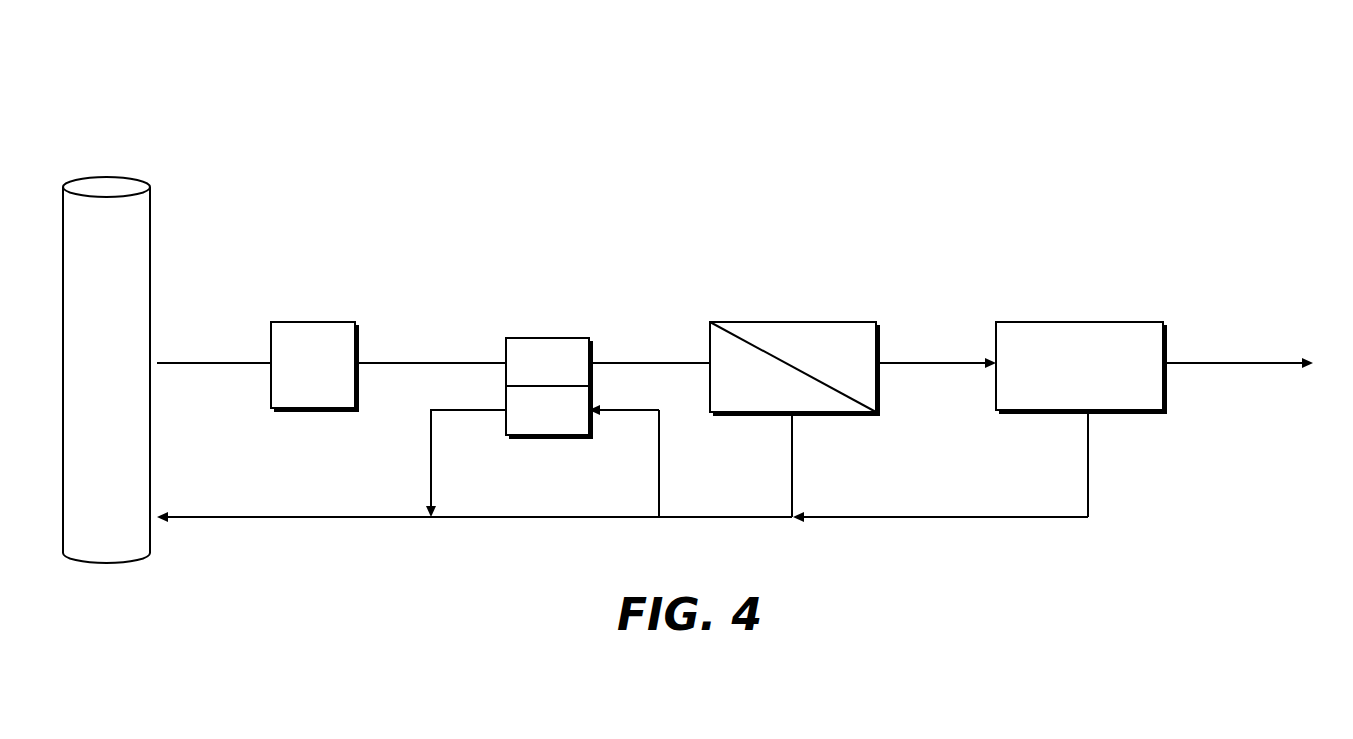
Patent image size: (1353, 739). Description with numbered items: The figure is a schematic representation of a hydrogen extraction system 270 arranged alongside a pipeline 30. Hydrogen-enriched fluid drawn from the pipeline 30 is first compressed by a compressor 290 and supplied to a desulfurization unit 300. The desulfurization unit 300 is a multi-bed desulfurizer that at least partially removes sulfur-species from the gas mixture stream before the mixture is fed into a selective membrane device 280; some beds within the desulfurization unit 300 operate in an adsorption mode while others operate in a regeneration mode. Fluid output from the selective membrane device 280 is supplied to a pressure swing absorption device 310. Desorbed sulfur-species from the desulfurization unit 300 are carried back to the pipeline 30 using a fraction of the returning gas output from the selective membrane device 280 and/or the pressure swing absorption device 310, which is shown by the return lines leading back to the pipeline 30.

The pipeline 30 is at (123, 172).
The hydrogen extraction system 270 is at (763, 127).
The selective membrane device 280 is at (828, 320).
The compressor 290 is at (314, 366).
The desulfurization unit 300 is at (571, 336).
The pressure swing absorption device 310 is at (1080, 367).